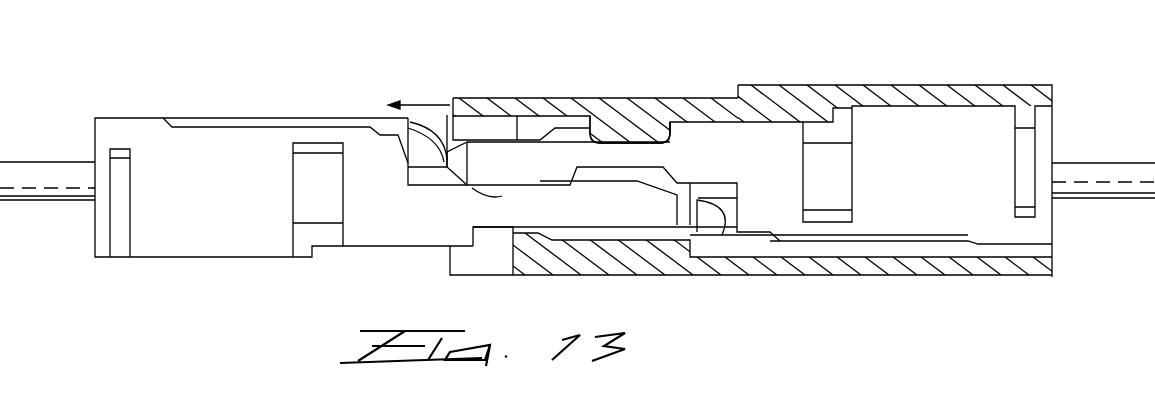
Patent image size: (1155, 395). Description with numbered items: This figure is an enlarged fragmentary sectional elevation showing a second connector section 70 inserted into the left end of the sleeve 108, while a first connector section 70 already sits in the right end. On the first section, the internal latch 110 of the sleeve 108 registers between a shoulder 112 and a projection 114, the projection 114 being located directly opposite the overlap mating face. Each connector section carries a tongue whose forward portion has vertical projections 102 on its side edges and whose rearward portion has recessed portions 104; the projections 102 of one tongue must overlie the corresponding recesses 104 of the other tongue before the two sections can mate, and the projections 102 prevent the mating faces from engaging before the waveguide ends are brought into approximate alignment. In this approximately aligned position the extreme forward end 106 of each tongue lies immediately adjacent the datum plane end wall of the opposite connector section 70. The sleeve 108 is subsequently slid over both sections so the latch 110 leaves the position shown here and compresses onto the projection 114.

The connector section 70 is at (768, 145).
The vertical projections 102 is at (520, 170).
The recessed portions 104 is at (472, 192).
The extreme forward end 106 is at (446, 158).
The sleeve 108 is at (638, 90).
The internal latch 110 is at (600, 140).
The shoulder 112 is at (657, 120).
The projection 114 is at (567, 130).